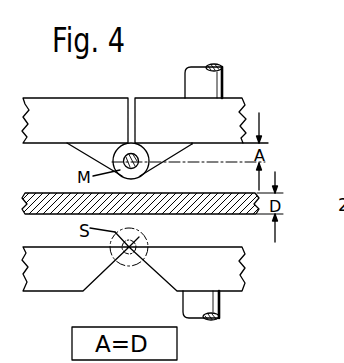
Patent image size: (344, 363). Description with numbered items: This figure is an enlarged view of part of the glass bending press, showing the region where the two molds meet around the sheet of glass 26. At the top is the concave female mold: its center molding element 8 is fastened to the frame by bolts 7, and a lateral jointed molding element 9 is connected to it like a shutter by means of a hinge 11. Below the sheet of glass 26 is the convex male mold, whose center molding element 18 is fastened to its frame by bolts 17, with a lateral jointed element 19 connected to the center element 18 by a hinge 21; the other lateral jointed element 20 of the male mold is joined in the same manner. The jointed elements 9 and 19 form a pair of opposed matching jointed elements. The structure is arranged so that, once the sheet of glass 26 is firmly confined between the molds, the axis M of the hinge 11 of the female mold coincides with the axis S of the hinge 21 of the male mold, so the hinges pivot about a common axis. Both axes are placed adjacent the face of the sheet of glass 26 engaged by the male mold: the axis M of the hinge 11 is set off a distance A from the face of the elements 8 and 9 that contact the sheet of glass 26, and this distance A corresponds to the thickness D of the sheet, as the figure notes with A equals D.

The bolts 7 is at (224, 84).
The center molding element 8 is at (237, 114).
The lateral jointed molding element 9 is at (42, 108).
The hinge 11 is at (142, 171).
The bolts 17 is at (221, 304).
The center molding element 18 is at (237, 277).
The lateral jointed element 19 is at (52, 283).
The lateral jointed element 20 is at (338, 178).
The hinge 21 is at (148, 236).
The sheet of glass 26 is at (43, 202).